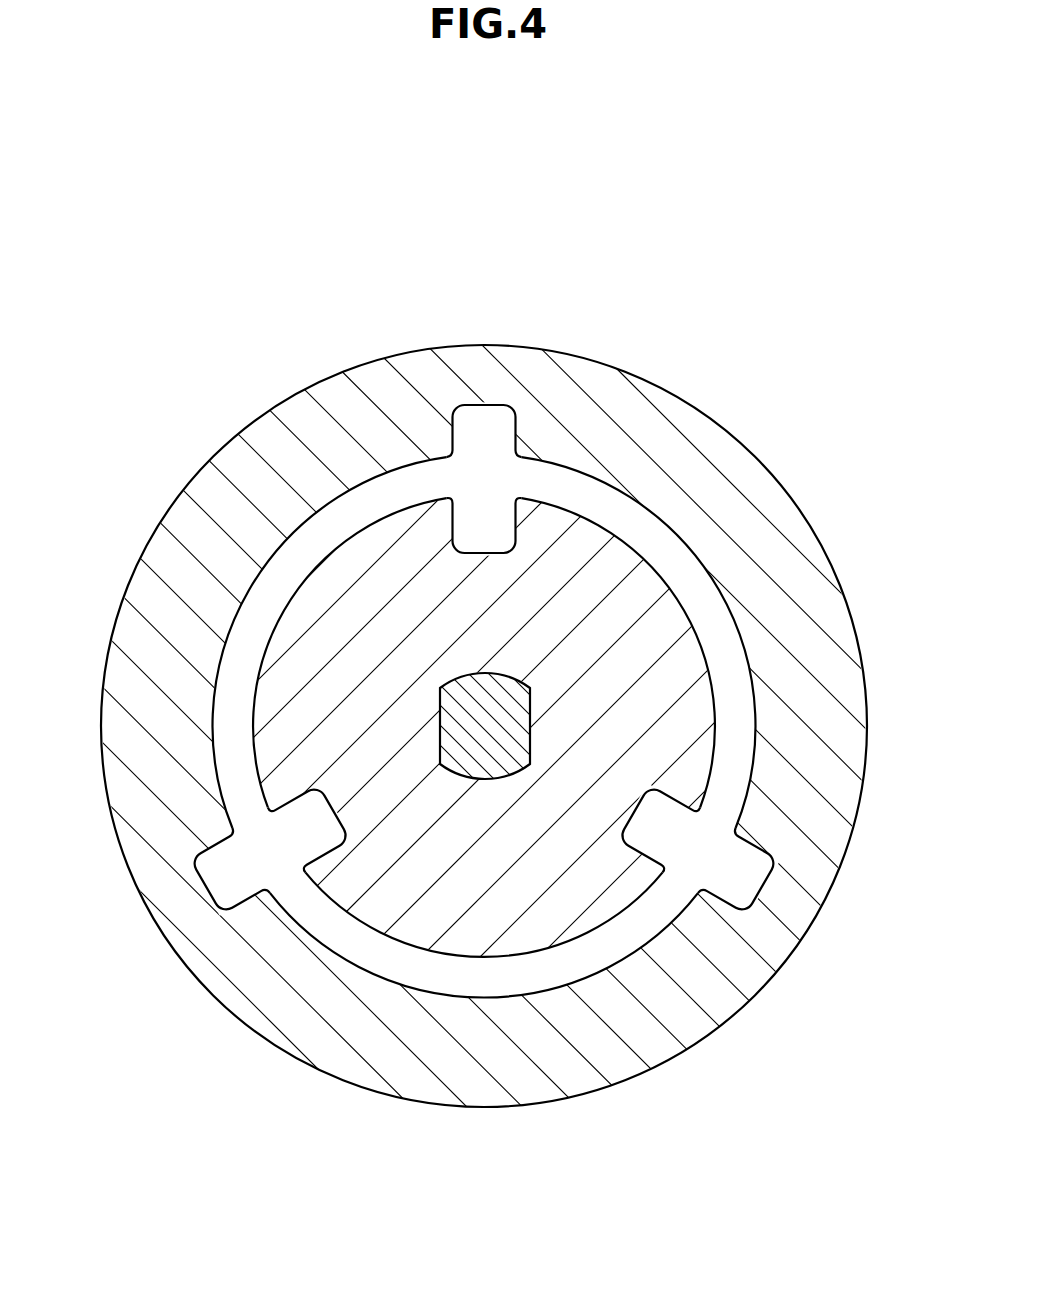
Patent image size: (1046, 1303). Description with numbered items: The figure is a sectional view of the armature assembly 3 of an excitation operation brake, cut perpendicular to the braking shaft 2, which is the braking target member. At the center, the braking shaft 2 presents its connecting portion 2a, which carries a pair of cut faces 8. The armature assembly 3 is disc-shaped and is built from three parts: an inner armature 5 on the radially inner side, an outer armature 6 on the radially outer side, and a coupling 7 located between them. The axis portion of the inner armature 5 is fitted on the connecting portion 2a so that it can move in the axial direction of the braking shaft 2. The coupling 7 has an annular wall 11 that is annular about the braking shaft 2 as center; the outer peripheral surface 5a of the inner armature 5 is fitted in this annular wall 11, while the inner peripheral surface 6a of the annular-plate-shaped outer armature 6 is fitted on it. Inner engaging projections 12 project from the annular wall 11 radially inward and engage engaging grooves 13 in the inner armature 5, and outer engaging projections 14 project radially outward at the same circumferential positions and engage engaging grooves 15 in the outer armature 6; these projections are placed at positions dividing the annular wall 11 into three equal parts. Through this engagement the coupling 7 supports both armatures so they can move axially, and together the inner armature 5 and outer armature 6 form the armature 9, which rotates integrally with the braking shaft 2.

The braking shaft 2 is at (490, 760).
The connecting portion 2a is at (467, 764).
The armature assembly 3 is at (183, 278).
The inner armature 5 is at (338, 607).
The outer peripheral surface 5a is at (272, 632).
The outer armature 6 is at (218, 490).
The inner peripheral surface 6a is at (338, 514).
The coupling 7 is at (357, 482).
The cut faces 8 is at (440, 734).
The armature 9 is at (124, 410).
The annular wall 11 is at (398, 486).
The inner engaging projections 12 is at (467, 527).
The engaging grooves 13 is at (493, 552).
The outer engaging projections 14 is at (487, 426).
The engaging grooves 15 is at (492, 428).